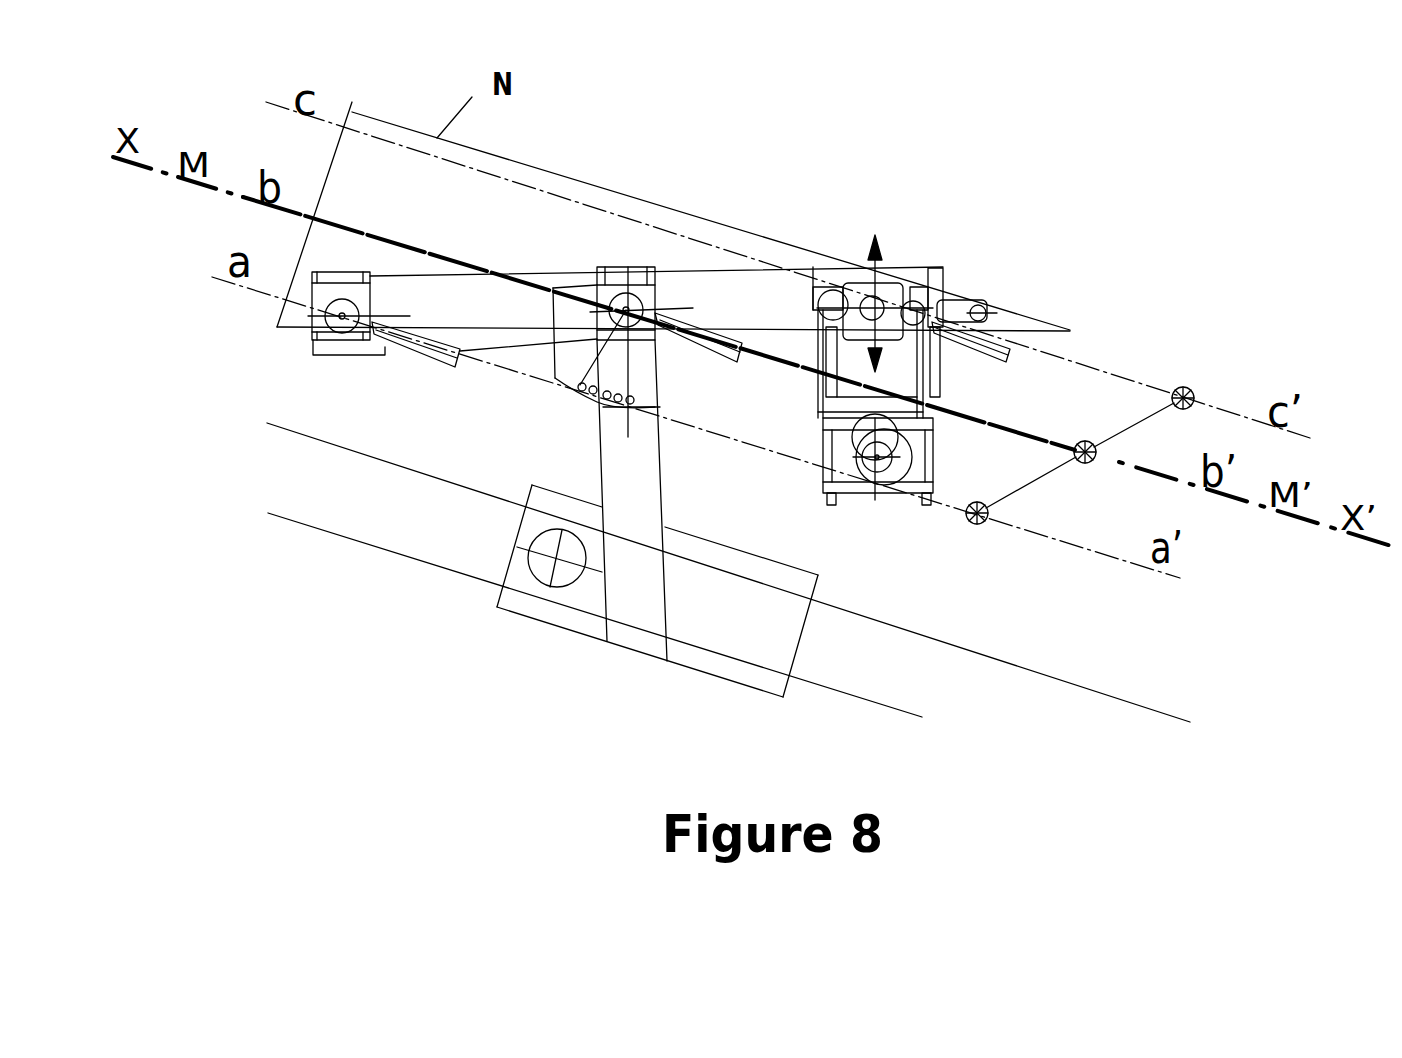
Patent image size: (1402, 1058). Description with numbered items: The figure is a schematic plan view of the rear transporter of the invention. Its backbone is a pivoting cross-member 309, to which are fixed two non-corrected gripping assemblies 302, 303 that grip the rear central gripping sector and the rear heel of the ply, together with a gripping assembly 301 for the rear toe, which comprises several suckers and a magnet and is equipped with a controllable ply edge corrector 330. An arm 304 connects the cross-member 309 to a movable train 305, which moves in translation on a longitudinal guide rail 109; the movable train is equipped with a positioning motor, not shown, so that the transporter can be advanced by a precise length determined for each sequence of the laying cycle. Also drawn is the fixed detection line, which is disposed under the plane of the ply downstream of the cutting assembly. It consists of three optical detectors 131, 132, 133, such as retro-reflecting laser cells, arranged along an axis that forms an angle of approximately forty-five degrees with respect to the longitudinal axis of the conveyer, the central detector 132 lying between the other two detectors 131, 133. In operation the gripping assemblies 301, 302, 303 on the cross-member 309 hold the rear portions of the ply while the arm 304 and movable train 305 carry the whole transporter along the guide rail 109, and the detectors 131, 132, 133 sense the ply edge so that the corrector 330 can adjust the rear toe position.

The longitudinal guide rail 109 is at (330, 497).
The optical detector 131 is at (983, 522).
The central detector 132 is at (1090, 462).
The optical detector 133 is at (1186, 387).
The gripping assembly for the rear toe 301 is at (917, 268).
The non-corrected gripping assembly 302 is at (610, 282).
The non-corrected gripping assembly 303 is at (311, 318).
The arm 304 is at (633, 513).
The movable train 305 is at (538, 605).
The pivoting cross-member 309 is at (723, 290).
The controllable ply edge corrector 330 is at (852, 510).